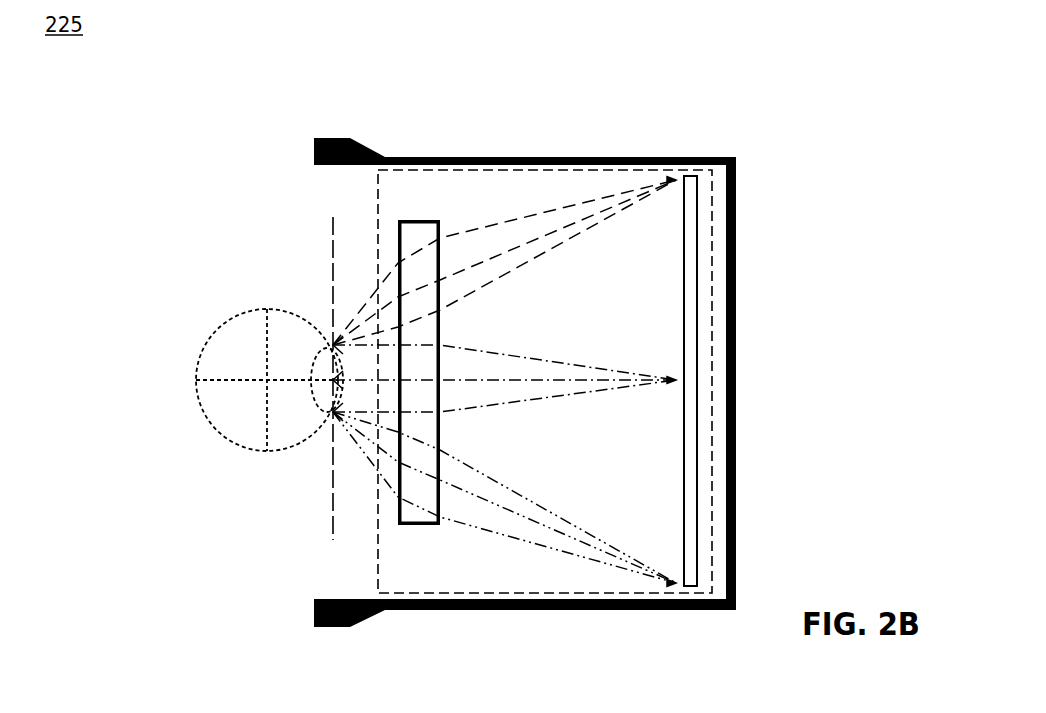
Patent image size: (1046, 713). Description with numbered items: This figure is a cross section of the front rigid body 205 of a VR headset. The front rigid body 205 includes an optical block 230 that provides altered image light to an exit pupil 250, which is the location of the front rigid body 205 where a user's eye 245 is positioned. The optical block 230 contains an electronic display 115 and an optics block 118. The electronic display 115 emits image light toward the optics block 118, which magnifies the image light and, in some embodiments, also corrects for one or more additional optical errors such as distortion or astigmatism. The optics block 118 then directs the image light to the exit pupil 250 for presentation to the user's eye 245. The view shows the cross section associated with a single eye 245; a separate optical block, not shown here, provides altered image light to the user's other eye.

The front rigid body 205 is at (700, 150).
The optical block 230 is at (378, 503).
The electronic display 115 is at (697, 295).
The optics block 118 is at (398, 235).
The exit pupil 250 is at (322, 522).
The eye 245 is at (233, 318).